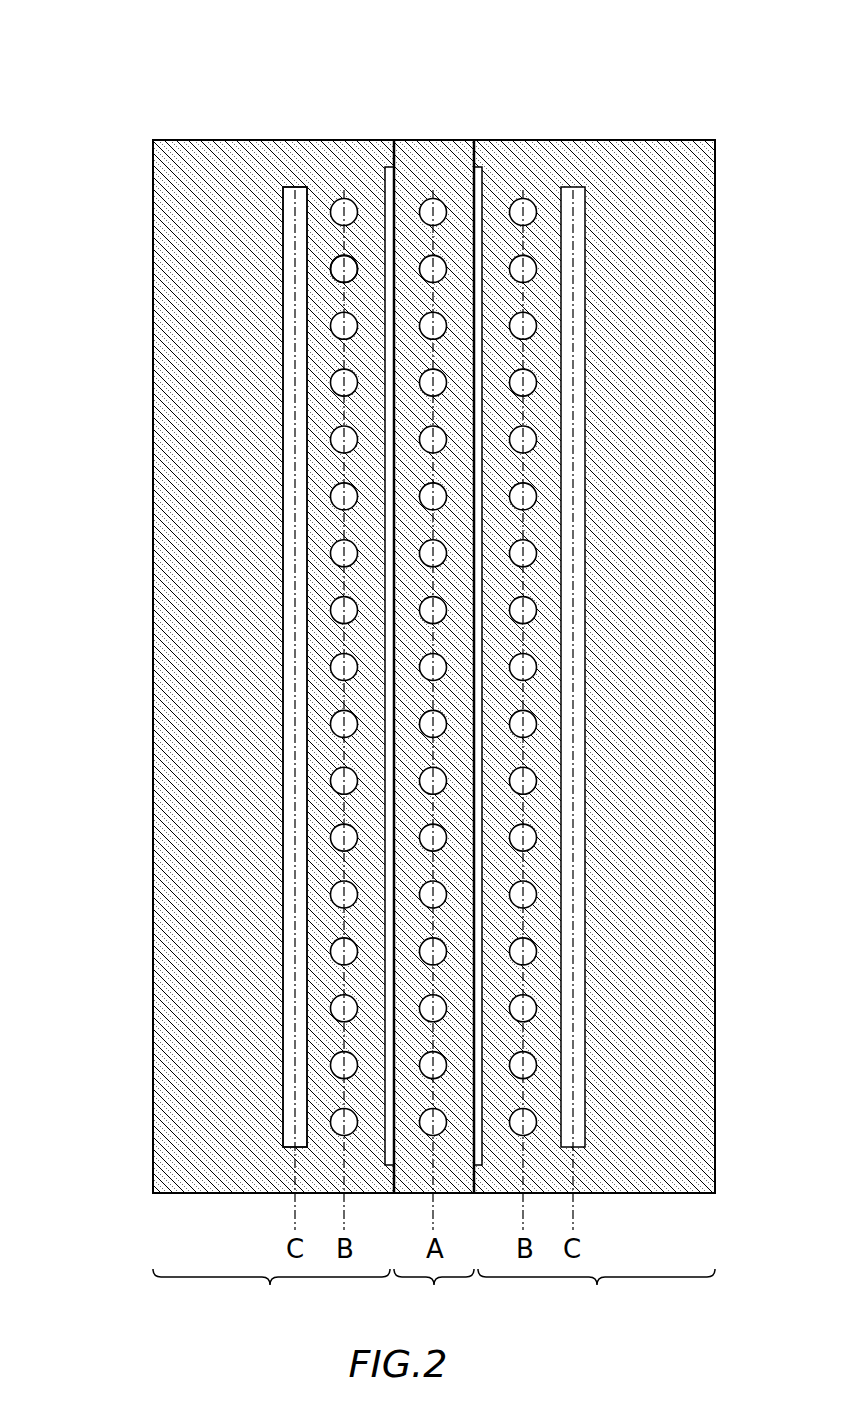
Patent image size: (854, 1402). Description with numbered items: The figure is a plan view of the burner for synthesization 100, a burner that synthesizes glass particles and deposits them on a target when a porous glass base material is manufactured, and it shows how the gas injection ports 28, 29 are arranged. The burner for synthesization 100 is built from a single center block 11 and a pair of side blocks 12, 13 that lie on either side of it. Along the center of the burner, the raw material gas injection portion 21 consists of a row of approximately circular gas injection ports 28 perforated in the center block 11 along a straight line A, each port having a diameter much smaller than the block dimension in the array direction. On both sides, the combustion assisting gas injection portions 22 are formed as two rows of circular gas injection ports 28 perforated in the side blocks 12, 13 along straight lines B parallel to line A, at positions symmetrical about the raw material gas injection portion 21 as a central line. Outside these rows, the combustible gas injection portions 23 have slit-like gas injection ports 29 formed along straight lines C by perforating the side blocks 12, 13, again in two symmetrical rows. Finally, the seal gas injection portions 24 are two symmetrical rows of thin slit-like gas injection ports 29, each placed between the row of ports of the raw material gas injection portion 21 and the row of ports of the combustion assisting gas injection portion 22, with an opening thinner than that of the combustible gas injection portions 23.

The burner for synthesization 100 is at (128, 77).
The center block 11 is at (434, 1299).
The side block 12 is at (271, 1299).
The side block 13 is at (596, 1299).
The raw material gas injection portion 21 is at (433, 150).
The combustion assisting gas injection portion 22 is at (345, 150).
The combustible gas injection portion 23 is at (295, 148).
The seal gas injection portion 24 is at (388, 127).
The gas injection port 28 is at (331, 270).
The gas injection port 29 is at (283, 203).